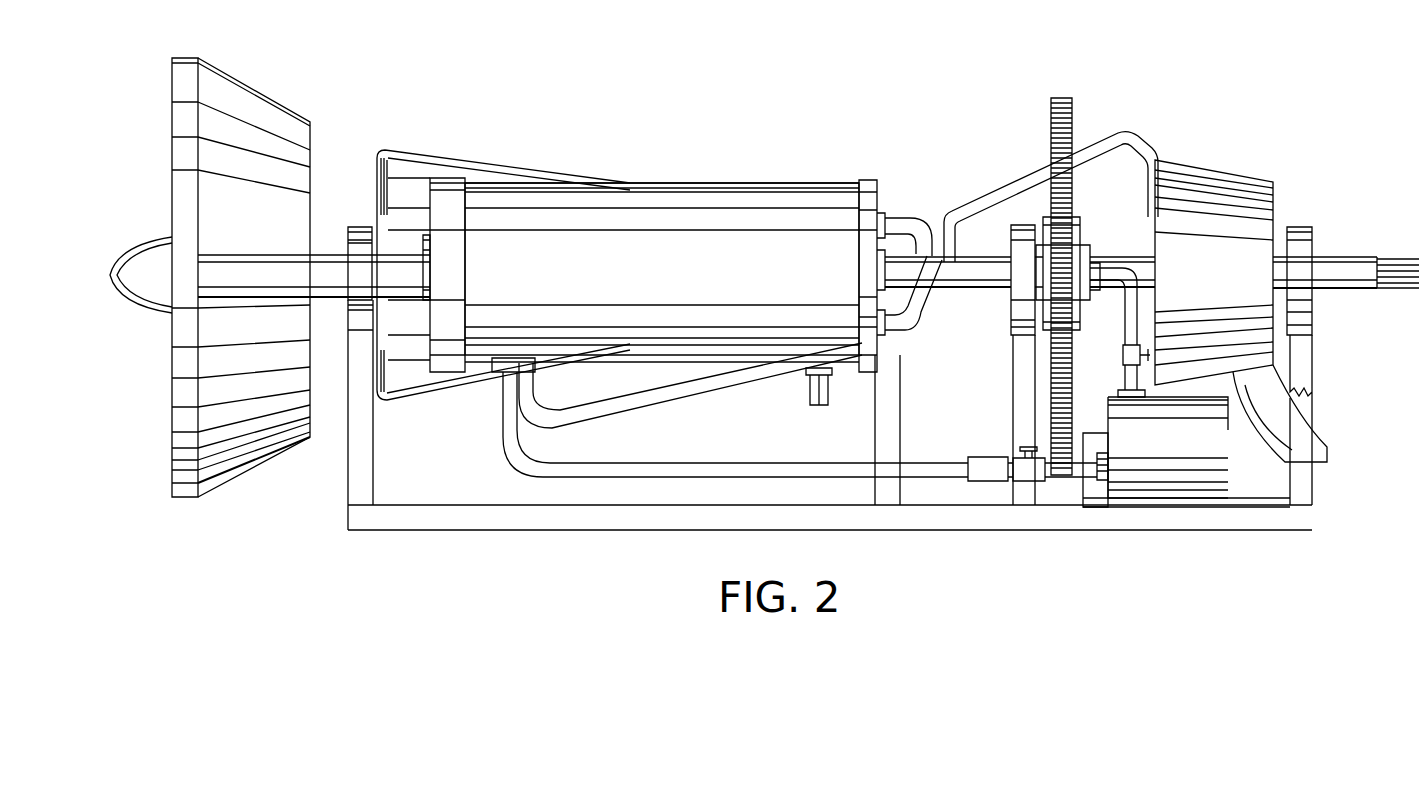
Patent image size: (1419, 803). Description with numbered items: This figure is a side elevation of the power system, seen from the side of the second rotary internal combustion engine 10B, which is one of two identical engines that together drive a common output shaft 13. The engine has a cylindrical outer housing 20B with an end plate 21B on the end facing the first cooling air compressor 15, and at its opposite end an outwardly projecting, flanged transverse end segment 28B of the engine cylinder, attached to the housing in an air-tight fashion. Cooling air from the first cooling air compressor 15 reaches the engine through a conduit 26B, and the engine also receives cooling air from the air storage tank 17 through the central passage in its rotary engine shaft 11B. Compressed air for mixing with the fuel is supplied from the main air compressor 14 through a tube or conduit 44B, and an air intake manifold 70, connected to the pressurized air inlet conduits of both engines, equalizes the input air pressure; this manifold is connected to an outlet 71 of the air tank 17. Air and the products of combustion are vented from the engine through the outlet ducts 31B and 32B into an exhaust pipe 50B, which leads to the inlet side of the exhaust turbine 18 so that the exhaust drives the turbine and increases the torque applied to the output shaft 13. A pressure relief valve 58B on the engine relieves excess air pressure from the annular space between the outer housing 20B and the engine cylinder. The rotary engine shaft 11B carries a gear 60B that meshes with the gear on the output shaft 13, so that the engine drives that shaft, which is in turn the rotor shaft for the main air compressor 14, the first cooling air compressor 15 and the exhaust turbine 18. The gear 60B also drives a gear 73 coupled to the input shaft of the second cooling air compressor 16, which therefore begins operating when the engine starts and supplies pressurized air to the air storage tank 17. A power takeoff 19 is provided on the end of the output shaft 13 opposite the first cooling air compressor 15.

The rotary internal combustion engine 10B is at (680, 168).
The rotary engine shaft 11B is at (975, 270).
The output shaft 13 is at (1107, 292).
The main air compressor 14 is at (470, 160).
The first cooling air compressor 15 is at (258, 104).
The second cooling air compressor 16 is at (1090, 436).
The air storage tank 17 is at (1190, 449).
The exhaust turbine 18 is at (1222, 282).
The power takeoff 19 is at (1392, 292).
The outer housing 20B is at (688, 281).
The end plate 21B is at (455, 273).
The conduit 26B is at (325, 262).
The flanged transverse end segment 28B is at (865, 180).
The outlet duct 31B is at (908, 225).
The outlet duct 32B is at (912, 333).
The tube or conduit 44B is at (632, 392).
The exhaust pipe 50B is at (984, 202).
The pressure relief valve 58B is at (812, 396).
The gear 60B is at (1072, 113).
The air intake manifold 70 is at (522, 461).
The outlet 71 is at (1098, 480).
The gear 73 is at (1053, 484).